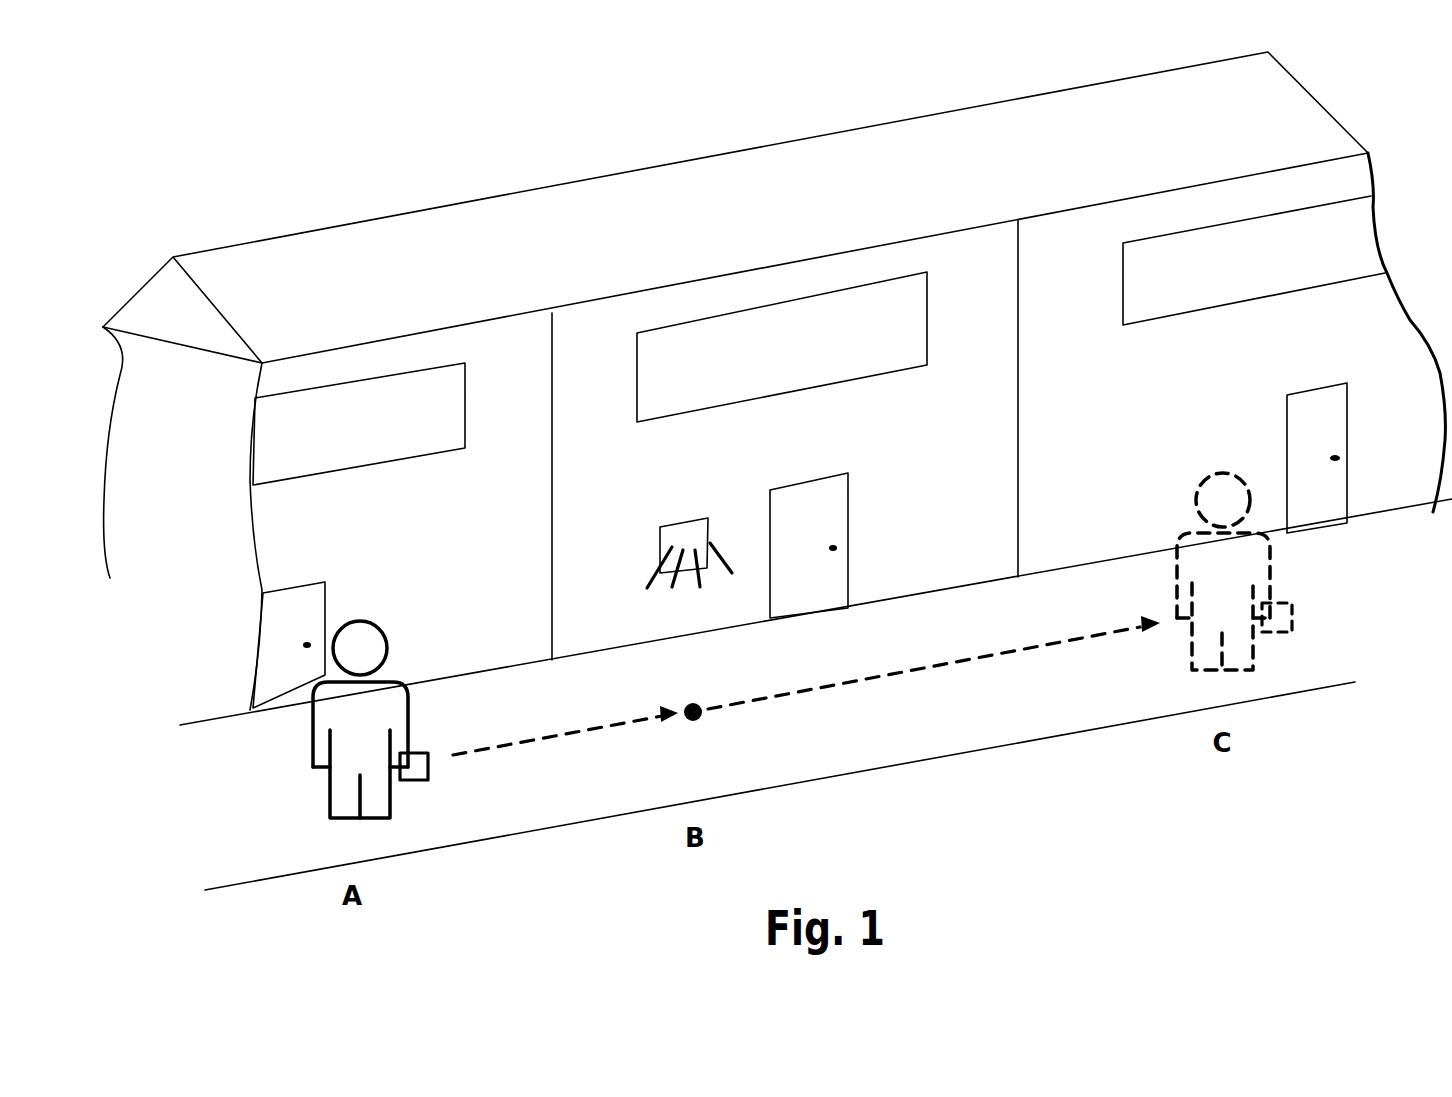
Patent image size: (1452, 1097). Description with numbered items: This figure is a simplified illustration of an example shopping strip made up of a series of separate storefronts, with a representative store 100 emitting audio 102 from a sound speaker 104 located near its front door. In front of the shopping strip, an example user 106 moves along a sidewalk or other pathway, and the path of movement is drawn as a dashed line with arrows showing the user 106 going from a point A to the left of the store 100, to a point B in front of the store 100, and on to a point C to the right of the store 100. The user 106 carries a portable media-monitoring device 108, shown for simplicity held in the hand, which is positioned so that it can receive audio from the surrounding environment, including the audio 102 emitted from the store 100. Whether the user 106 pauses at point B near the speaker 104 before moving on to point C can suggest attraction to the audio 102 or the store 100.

The store 100 is at (903, 452).
The audio 102 is at (650, 575).
The sound speaker 104 is at (658, 542).
The user 106 is at (312, 732).
The portable media-monitoring device 108 is at (428, 768).